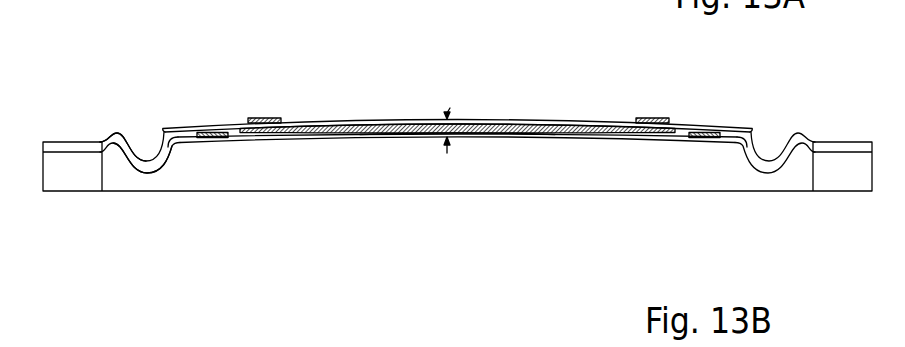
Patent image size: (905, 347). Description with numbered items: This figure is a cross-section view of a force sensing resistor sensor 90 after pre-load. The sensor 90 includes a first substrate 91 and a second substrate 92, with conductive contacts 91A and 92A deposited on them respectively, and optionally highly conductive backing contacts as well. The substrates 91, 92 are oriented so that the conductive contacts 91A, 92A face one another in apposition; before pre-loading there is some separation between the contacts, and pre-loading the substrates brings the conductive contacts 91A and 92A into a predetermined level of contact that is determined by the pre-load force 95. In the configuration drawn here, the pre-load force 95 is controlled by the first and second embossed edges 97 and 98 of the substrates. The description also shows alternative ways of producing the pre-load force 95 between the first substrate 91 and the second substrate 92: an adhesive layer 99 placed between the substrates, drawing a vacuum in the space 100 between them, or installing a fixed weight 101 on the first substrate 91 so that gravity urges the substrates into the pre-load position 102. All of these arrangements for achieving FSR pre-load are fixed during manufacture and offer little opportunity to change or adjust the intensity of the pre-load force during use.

The sensor 90 is at (121, 26).
The first substrate 91 is at (317, 122).
The conductive contact 91A is at (243, 131).
The second substrate 92 is at (352, 136).
The conductive contact 92A is at (242, 138).
The pre-load force 95 is at (450, 108).
The first embossed edge 97 is at (116, 133).
The second embossed edge 98 is at (143, 172).
The adhesive layer 99 is at (210, 134).
The space 100 is at (163, 130).
The fixed weight 101 is at (263, 118).
The pre-load position 102 is at (472, 153).